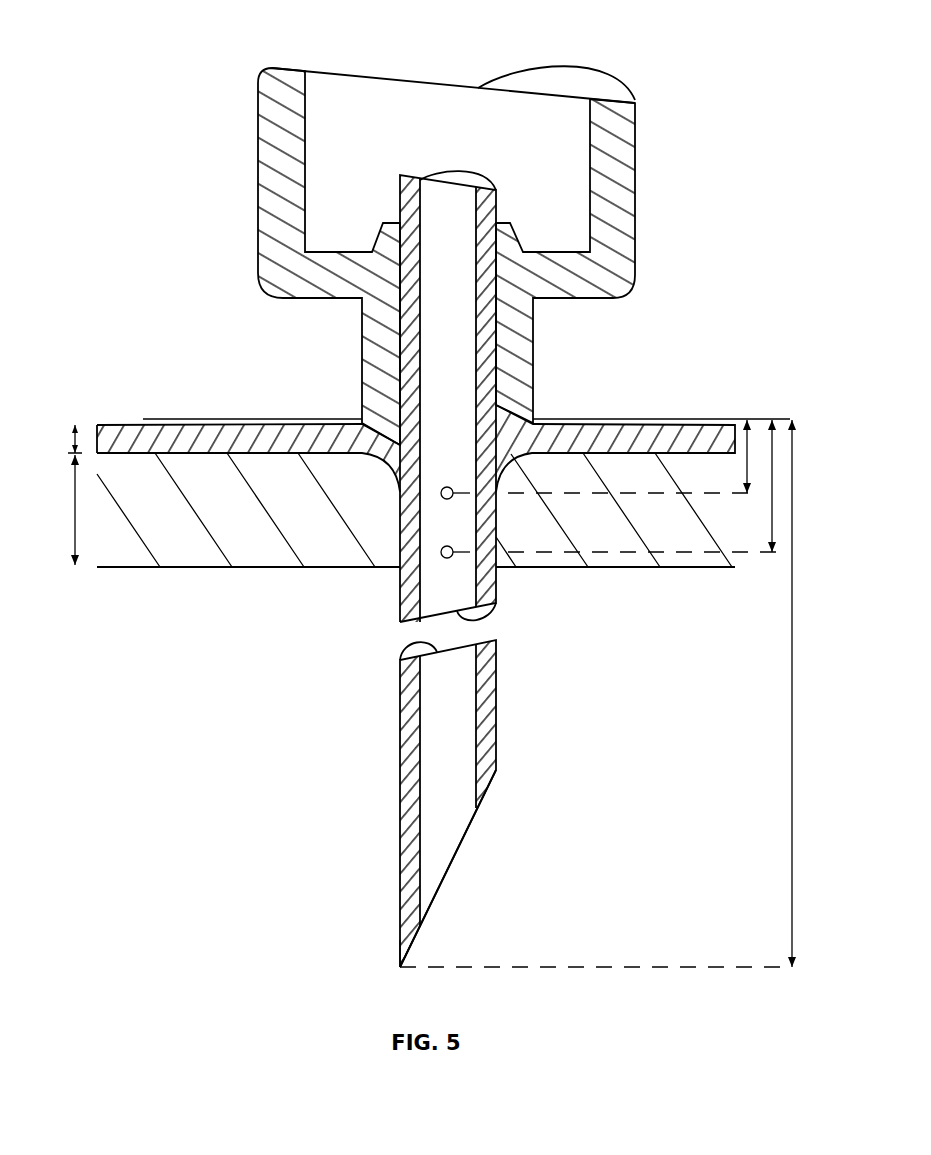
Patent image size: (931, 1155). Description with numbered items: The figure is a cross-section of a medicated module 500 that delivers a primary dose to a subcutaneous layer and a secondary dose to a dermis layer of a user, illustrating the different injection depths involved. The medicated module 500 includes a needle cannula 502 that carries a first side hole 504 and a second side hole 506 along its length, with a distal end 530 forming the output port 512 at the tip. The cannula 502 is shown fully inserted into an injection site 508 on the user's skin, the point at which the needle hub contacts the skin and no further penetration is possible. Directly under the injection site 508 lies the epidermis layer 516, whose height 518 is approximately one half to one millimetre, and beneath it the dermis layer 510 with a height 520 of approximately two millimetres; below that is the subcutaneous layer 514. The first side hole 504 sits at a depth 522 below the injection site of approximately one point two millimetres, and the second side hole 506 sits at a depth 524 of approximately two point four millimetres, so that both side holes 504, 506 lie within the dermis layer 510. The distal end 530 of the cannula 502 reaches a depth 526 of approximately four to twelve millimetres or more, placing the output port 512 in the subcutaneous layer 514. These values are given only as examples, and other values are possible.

The medicated module 500 is at (188, 120).
The needle cannula 502 is at (496, 745).
The first side hole 504 is at (440, 495).
The second side hole 506 is at (443, 558).
The injection site 508 is at (348, 407).
The dermis layer 510 is at (121, 547).
The output port 512 is at (540, 871).
The subcutaneous layer 514 is at (199, 762).
The epidermis layer 516 is at (91, 432).
The height of epidermis layer 518 is at (73, 440).
The height of dermis layer 520 is at (75, 512).
The depth of first side hole 522 is at (742, 440).
The depth of second side hole 524 is at (768, 458).
The depth of distal end 526 is at (792, 473).
The distal end 530 is at (400, 948).